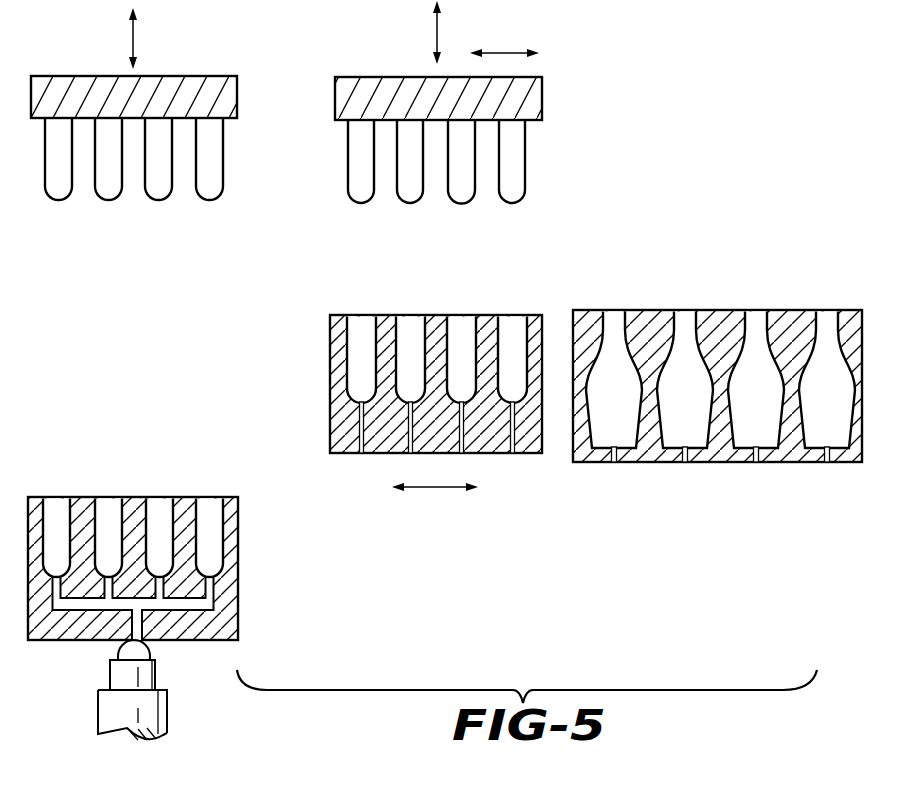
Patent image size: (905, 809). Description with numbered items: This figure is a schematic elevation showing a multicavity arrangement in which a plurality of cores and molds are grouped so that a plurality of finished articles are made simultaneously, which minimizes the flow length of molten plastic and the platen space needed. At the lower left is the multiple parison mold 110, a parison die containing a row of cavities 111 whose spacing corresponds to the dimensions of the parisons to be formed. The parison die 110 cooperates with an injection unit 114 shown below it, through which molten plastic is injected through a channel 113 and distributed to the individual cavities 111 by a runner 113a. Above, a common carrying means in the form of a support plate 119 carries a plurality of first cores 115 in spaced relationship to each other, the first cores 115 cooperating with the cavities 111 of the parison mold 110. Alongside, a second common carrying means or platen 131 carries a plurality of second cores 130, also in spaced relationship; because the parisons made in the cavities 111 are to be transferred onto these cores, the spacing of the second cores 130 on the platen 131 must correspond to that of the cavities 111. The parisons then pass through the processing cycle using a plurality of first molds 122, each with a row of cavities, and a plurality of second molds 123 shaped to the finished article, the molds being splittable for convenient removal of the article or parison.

The multiple parison mold 110 is at (242, 577).
The cavities 111 is at (220, 513).
The channel 113 is at (123, 627).
The runner 113a is at (208, 605).
The injection unit 114 is at (147, 710).
The core pins 115 is at (102, 190).
The support plate 119 is at (84, 90).
The first molds 122 is at (340, 420).
The second molds 123 is at (643, 448).
The second cores 130 is at (410, 183).
The platen 131 is at (370, 90).